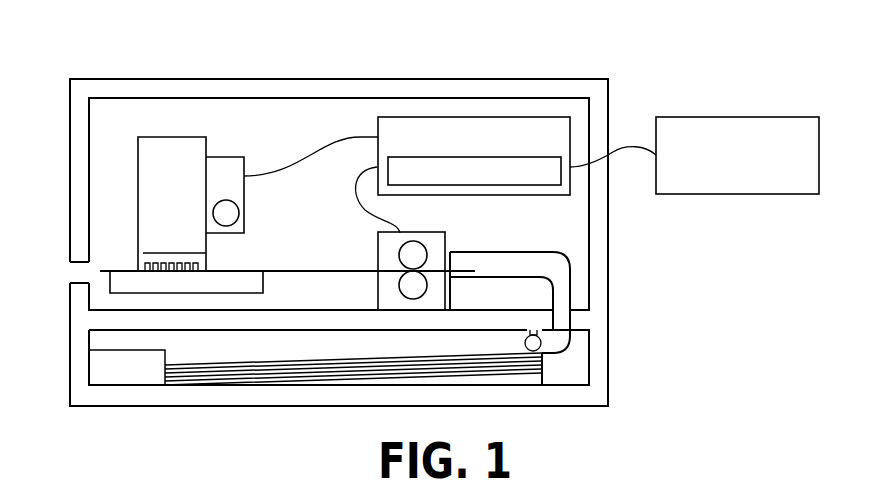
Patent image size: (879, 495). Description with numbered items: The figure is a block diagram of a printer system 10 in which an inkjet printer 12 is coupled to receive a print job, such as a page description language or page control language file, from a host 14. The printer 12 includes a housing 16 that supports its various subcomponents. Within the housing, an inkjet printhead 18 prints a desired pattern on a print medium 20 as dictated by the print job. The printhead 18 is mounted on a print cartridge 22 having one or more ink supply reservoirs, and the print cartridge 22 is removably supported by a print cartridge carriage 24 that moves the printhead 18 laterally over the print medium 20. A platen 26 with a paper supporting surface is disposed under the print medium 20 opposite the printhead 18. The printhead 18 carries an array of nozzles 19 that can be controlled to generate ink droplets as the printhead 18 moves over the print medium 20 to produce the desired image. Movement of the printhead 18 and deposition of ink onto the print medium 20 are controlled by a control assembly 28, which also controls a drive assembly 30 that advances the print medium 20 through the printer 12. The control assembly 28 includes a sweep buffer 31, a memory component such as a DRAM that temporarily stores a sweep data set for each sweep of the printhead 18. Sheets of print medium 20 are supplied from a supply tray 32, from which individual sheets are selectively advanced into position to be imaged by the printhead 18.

The printer system 10 is at (676, 326).
The inkjet printer 12 is at (252, 66).
The host 14 is at (685, 137).
The housing 16 is at (598, 280).
The inkjet printhead 18 is at (117, 264).
The nozzles 19 is at (197, 263).
The print medium 20 is at (312, 268).
The print cartridge 22 is at (145, 173).
The print cartridge carriage 24 is at (225, 187).
The platen 26 is at (255, 280).
The control assembly 28 is at (446, 122).
The drive assembly 30 is at (437, 242).
The sweep buffer 31 is at (550, 175).
The supply tray 32 is at (533, 423).